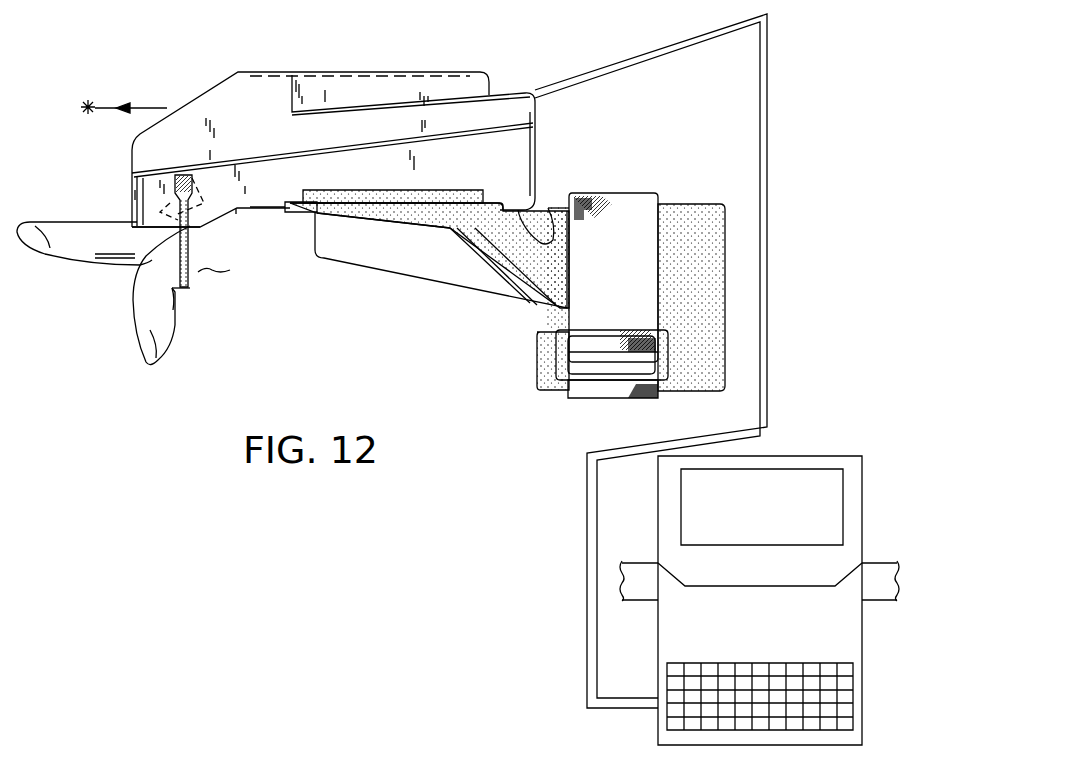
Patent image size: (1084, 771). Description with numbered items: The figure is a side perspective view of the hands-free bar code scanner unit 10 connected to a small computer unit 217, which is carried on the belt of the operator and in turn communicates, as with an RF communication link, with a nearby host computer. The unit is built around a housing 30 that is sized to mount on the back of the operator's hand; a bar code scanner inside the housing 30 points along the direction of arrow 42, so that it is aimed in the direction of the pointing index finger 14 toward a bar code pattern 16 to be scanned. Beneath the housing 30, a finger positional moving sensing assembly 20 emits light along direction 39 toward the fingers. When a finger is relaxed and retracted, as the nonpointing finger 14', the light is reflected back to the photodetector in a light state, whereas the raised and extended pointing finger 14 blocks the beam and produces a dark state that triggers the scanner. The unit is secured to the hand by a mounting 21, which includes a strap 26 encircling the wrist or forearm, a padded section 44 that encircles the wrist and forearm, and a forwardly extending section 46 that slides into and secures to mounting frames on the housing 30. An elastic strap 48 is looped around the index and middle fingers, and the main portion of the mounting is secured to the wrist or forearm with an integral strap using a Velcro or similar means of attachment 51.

The hands-free bar code scanner unit 10 is at (498, 68).
The housing 30 is at (270, 124).
The bar code pattern 16 is at (88, 95).
The arrow 42 is at (160, 108).
The finger positional moving sensing assembly 20 is at (170, 203).
The direction 39 is at (170, 238).
The pointing index finger 14 is at (84, 262).
The nonpointing finger 14' is at (180, 295).
The elastic strap 48 is at (190, 287).
The forwardly extending section 46 is at (425, 254).
The mounting 21 is at (500, 302).
The strap 26 is at (632, 290).
The section 44 is at (708, 290).
The means of attachment 51 is at (620, 396).
The small computer unit 217 is at (782, 637).